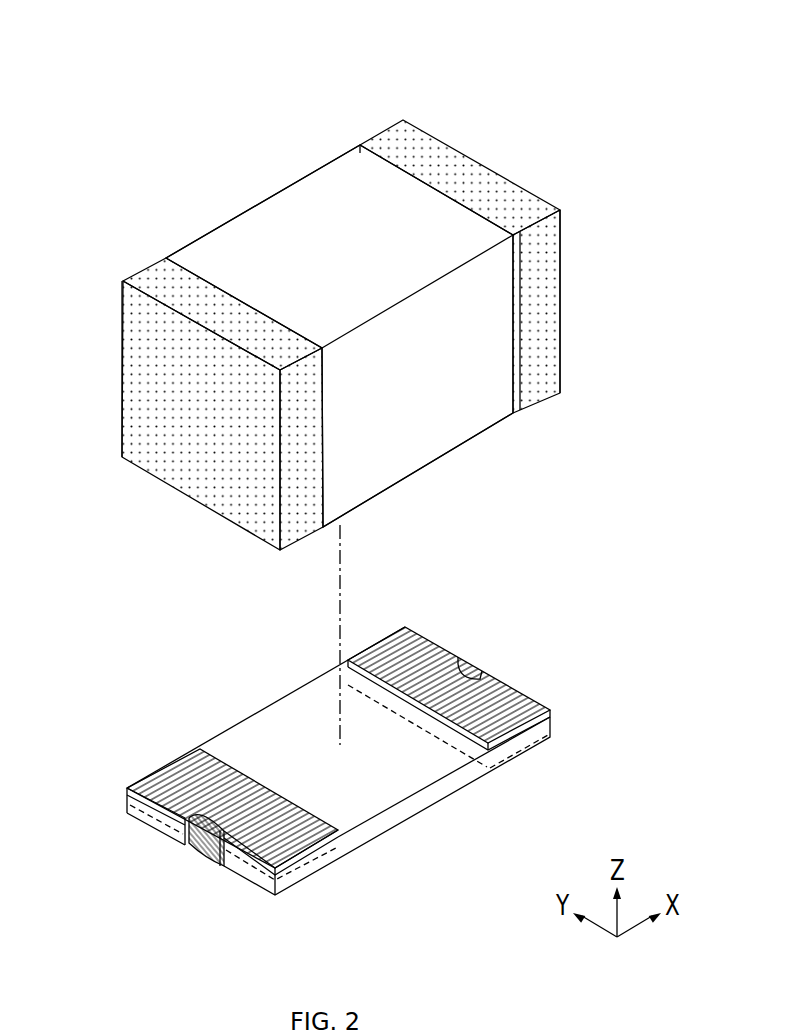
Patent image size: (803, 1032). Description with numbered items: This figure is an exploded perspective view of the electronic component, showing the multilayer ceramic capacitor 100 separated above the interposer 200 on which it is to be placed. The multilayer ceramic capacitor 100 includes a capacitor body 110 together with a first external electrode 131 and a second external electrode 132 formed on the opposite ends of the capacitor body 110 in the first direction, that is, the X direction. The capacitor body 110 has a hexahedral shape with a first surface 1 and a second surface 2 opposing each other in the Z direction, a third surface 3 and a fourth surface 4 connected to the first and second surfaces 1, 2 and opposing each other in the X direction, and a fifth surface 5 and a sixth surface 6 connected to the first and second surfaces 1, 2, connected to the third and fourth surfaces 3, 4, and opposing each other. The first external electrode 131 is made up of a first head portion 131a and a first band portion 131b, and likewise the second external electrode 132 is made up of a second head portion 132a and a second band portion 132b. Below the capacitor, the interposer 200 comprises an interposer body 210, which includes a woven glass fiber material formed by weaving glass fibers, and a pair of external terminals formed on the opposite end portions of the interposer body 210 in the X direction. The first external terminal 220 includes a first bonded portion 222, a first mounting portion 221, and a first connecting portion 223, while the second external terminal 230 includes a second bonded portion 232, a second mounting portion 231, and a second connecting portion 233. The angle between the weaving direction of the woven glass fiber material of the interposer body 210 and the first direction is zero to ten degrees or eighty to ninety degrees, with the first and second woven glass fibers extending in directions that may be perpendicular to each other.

The first surface 1 is at (414, 451).
The second surface 2 is at (334, 205).
The third surface 3 is at (144, 393).
The fourth surface 4 is at (496, 188).
The fifth surface 5 is at (460, 422).
The sixth surface 6 is at (242, 257).
The multilayer ceramic capacitor 100 is at (582, 302).
The capacitor body 110 is at (275, 235).
The first external electrode 131 is at (180, 363).
The first head portion 131a is at (140, 325).
The first band portion 131b is at (150, 278).
The second external electrode 132 is at (448, 209).
The second head portion 132a is at (447, 132).
The second band portion 132b is at (452, 148).
The interposer 200 is at (581, 725).
The interposer body 210 is at (420, 803).
The first external terminal 220 is at (195, 854).
The first mounting portion 221 is at (162, 850).
The first bonded portion 222 is at (234, 875).
The first connecting portion 223 is at (193, 847).
The second external terminal 230 is at (490, 668).
The second mounting portion 231 is at (545, 703).
The second bonded portion 232 is at (513, 697).
The second connecting portion 233 is at (480, 667).